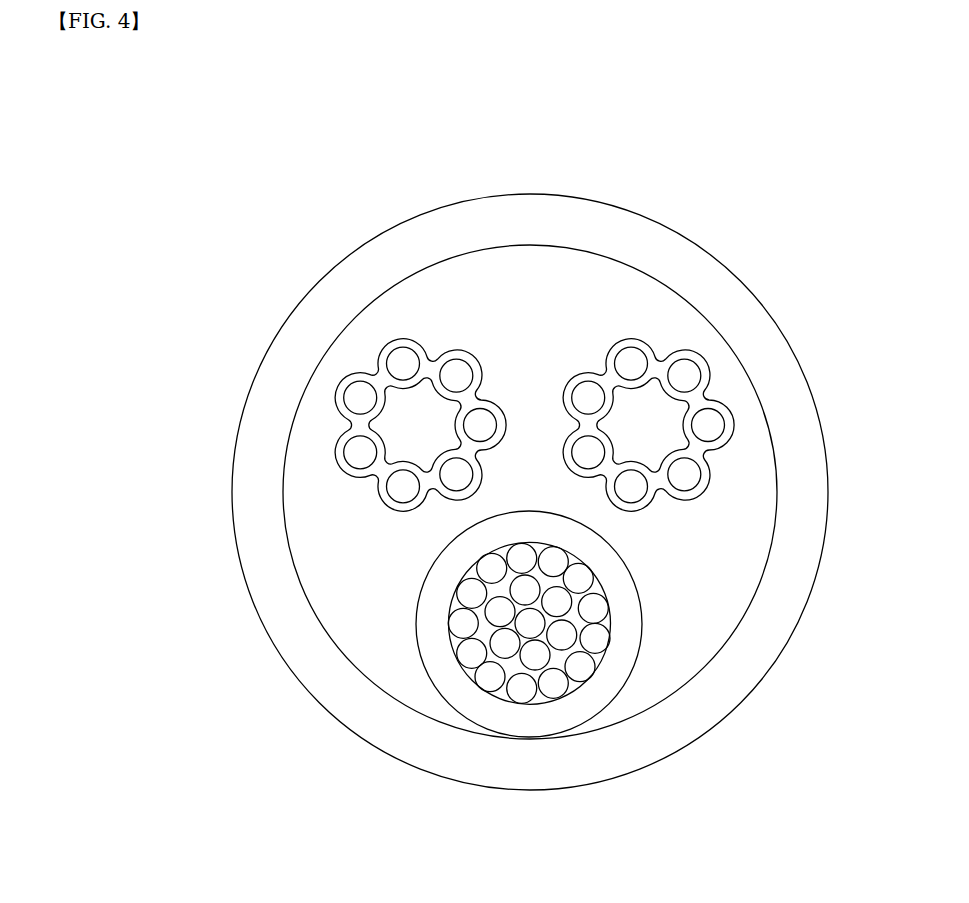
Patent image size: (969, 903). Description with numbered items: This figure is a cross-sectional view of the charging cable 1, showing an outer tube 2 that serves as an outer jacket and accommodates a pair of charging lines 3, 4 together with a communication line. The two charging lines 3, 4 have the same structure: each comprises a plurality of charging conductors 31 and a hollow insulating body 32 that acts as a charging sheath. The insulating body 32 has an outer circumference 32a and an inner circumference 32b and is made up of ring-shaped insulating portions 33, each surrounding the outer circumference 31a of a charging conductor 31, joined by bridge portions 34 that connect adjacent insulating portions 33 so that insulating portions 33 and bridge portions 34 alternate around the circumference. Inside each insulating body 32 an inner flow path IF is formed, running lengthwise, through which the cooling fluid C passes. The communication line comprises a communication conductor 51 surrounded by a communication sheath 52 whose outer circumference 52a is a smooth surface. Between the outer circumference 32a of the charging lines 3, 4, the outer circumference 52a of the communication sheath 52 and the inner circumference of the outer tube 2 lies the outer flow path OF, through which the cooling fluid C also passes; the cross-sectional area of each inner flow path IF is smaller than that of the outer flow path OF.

The charging cable 1 is at (787, 190).
The outer tube 2 is at (753, 323).
The charging line 3 is at (418, 122).
The charging line 4 is at (676, 333).
The charging conductor 31 is at (402, 363).
The outer circumference of charging conductor 31a is at (343, 399).
The insulating body 32 is at (435, 158).
The outer circumference of insulating body 32a is at (445, 398).
The inner circumference of insulating body 32b is at (395, 512).
The insulating portion 33 is at (403, 340).
The bridge portion 34 is at (432, 354).
The communication conductor 51 is at (498, 648).
The communication sheath 52 is at (578, 693).
The outer circumference of communication sheath 52a is at (637, 667).
The inner flow path IF is at (411, 415).
The outer flow path OF is at (696, 557).
The cooling fluid C is at (698, 622).